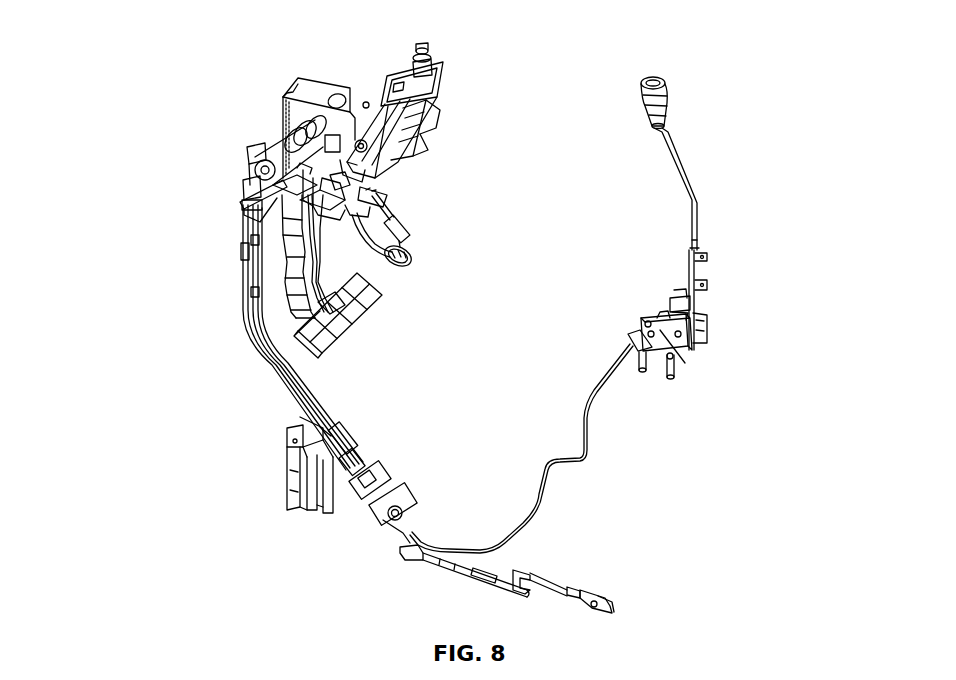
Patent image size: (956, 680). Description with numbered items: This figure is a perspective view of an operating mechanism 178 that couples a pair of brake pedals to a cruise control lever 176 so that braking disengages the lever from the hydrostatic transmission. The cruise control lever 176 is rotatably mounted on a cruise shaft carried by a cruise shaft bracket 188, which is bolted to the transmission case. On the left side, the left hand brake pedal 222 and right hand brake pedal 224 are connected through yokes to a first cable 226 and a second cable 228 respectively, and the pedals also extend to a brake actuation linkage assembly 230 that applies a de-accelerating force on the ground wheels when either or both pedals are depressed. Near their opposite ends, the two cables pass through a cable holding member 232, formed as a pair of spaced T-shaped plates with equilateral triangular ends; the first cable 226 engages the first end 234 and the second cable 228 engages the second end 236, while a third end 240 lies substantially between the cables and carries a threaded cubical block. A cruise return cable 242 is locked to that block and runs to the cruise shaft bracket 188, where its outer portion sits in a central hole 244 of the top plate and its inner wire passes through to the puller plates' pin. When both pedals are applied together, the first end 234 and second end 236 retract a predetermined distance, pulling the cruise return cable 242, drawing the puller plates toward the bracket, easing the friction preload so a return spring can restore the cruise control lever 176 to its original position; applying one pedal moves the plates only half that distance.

The cruise control lever 176 is at (680, 167).
The operating mechanism 178 is at (222, 403).
The cruise shaft bracket 188 is at (714, 332).
The left hand brake pedal 222 is at (330, 337).
The right hand brake pedal 224 is at (372, 300).
The first cable 226 is at (245, 263).
The second cable 228 is at (247, 302).
The brake actuation linkage assembly 230 is at (398, 543).
The cable holding member 232 is at (350, 485).
The first end 234 is at (342, 472).
The second end 236 is at (377, 487).
The third end 240 is at (380, 487).
The cruise return cable 242 is at (547, 500).
The central hole 244 is at (672, 352).